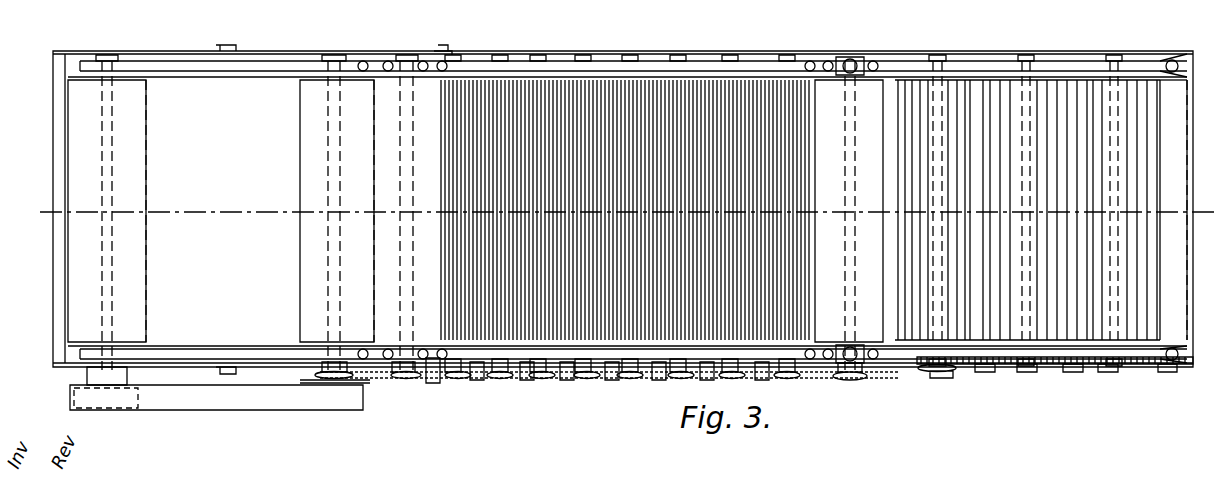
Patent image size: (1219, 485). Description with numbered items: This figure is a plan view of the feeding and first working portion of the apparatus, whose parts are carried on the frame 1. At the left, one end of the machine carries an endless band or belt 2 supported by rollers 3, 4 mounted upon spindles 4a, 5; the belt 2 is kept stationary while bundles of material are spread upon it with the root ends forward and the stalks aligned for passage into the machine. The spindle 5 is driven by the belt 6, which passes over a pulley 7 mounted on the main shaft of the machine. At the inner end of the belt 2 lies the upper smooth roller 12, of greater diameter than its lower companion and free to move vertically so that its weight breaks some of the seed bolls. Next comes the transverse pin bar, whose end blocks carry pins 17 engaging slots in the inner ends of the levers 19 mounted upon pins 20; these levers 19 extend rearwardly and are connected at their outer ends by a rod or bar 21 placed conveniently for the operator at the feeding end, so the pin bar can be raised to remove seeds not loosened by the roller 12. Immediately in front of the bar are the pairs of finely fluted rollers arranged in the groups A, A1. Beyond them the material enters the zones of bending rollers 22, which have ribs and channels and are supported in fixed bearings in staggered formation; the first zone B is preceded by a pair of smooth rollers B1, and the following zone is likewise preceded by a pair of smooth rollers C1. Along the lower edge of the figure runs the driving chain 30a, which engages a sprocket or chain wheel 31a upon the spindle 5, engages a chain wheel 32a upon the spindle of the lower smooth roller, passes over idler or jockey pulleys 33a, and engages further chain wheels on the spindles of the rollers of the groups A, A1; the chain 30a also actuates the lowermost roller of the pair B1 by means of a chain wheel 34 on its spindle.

The frame 1 is at (618, 206).
The endless band or belt 2 is at (144, 211).
The roller 3 is at (148, 120).
The roller 4 is at (332, 118).
The spindle 4a is at (110, 292).
The spindle 5 is at (300, 140).
The belt 6 is at (275, 395).
The pulley 7 is at (80, 410).
The upper smooth roller 12 is at (385, 90).
The pin 17 is at (448, 45).
The lever 19 is at (300, 51).
The pin 20 is at (236, 45).
The rod or bar 21 is at (50, 95).
The bending roller 22 is at (1117, 310).
The chain 30a is at (584, 381).
The sprocket or chain wheel 31a is at (330, 382).
The chain wheel 32a is at (400, 382).
The idler or jockey pulley 33a is at (436, 384).
The chain wheel 34 is at (852, 381).
The group of finely fluted rollers A is at (603, 46).
The group of finely fluted rollers A1 is at (810, 46).
The zone of bending rollers B is at (1153, 46).
The pair of smooth preceding rollers B1 is at (844, 213).
The pair of smooth preceding rollers C1 is at (1173, 208).